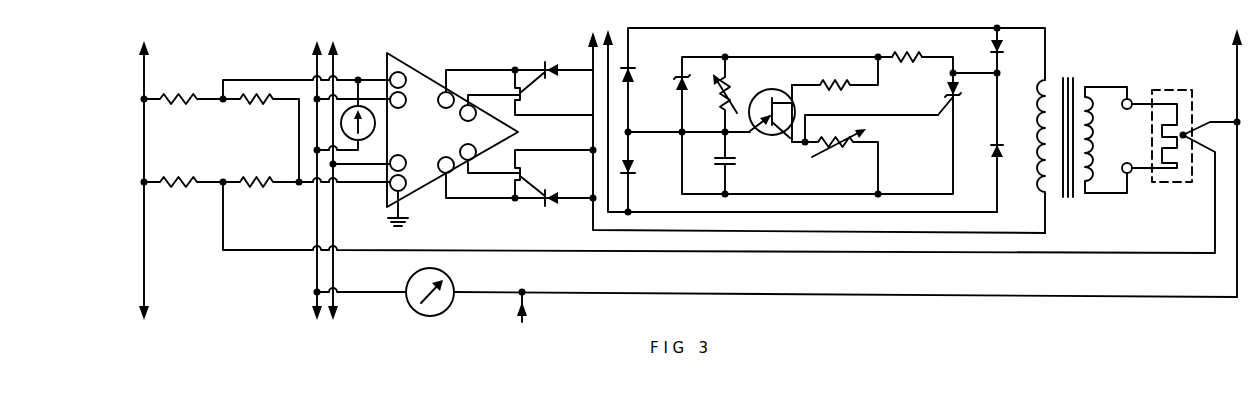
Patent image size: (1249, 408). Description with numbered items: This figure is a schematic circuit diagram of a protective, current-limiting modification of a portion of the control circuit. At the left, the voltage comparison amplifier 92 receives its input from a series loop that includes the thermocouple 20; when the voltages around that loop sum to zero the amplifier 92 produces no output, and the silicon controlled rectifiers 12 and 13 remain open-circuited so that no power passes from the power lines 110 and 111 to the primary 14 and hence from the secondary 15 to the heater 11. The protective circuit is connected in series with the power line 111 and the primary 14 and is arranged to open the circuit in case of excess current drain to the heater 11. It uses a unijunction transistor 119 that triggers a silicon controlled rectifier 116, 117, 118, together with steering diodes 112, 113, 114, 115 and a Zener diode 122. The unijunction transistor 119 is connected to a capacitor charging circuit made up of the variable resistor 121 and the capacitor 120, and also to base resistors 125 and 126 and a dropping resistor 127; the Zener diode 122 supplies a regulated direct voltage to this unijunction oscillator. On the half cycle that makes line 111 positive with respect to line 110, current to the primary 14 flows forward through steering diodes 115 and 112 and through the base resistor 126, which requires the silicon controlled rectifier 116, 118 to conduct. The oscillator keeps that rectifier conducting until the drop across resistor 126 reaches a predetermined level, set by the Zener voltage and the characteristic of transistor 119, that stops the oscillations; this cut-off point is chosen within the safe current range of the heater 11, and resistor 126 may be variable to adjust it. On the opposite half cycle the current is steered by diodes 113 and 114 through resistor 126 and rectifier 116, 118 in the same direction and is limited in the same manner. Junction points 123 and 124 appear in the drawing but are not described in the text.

The amplifier 92 is at (413, 194).
The silicon controlled rectifier 12 is at (555, 66).
The silicon controlled rectifier 13 is at (553, 204).
The power line 110 is at (588, 42).
The power line 111 is at (611, 38).
The steering diode 112 is at (633, 72).
The steering diode 113 is at (632, 168).
The steering diode 114 is at (1005, 50).
The steering diode 115 is at (1000, 157).
The silicon controlled rectifier 116 is at (963, 87).
The silicon controlled rectifier 117 is at (955, 98).
The silicon controlled rectifier 118 is at (948, 107).
The unijunction transistor 119 is at (763, 134).
The capacitor 120 is at (716, 158).
The variable resistor 121 is at (731, 95).
The Zener diode 122 is at (689, 88).
The junction 123 is at (630, 129).
The conductor 124 is at (1005, 73).
The base resistor 125 is at (833, 79).
The base resistor 126 is at (836, 150).
The dropping resistor 127 is at (903, 70).
The primary 14 is at (1047, 198).
The secondary 15 is at (1090, 198).
The heater 11 is at (1165, 180).
The thermocouple 20 is at (1199, 121).